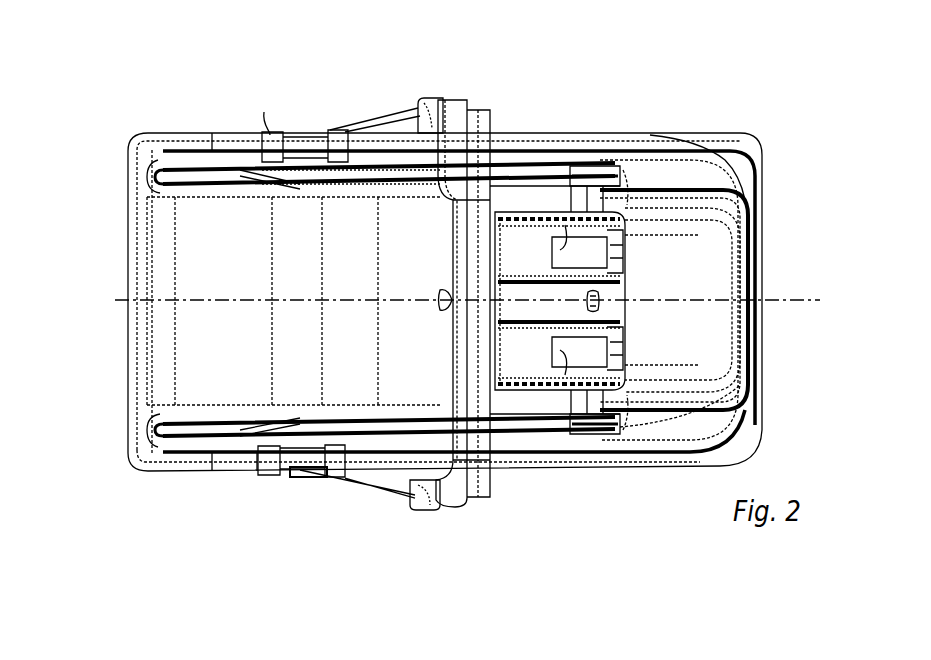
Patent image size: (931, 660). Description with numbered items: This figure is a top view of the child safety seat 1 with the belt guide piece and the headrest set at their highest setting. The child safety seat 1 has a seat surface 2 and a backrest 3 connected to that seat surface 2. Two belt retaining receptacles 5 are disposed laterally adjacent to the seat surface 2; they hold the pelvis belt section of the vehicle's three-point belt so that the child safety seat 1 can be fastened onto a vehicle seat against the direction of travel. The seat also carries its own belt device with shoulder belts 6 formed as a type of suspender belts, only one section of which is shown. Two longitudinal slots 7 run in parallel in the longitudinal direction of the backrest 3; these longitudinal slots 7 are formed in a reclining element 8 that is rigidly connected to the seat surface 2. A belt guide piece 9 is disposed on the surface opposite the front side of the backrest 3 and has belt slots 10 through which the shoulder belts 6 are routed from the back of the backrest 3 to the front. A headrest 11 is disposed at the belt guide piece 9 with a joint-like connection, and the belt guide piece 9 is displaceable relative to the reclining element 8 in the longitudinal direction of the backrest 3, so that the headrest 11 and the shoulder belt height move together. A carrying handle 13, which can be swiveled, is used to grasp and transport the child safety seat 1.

The child safety seat 1 is at (215, 89).
The seat surface 2 is at (198, 243).
The backrest 3 is at (690, 182).
The belt retaining receptacles 5 is at (304, 130).
The shoulder belts 6 is at (577, 240).
The longitudinal slots 7 is at (521, 232).
The reclining element 8 is at (503, 215).
The belt guide piece 9 is at (535, 400).
The belt slots 10 is at (612, 162).
The headrest 11 is at (693, 263).
The carrying handle 13 is at (435, 495).